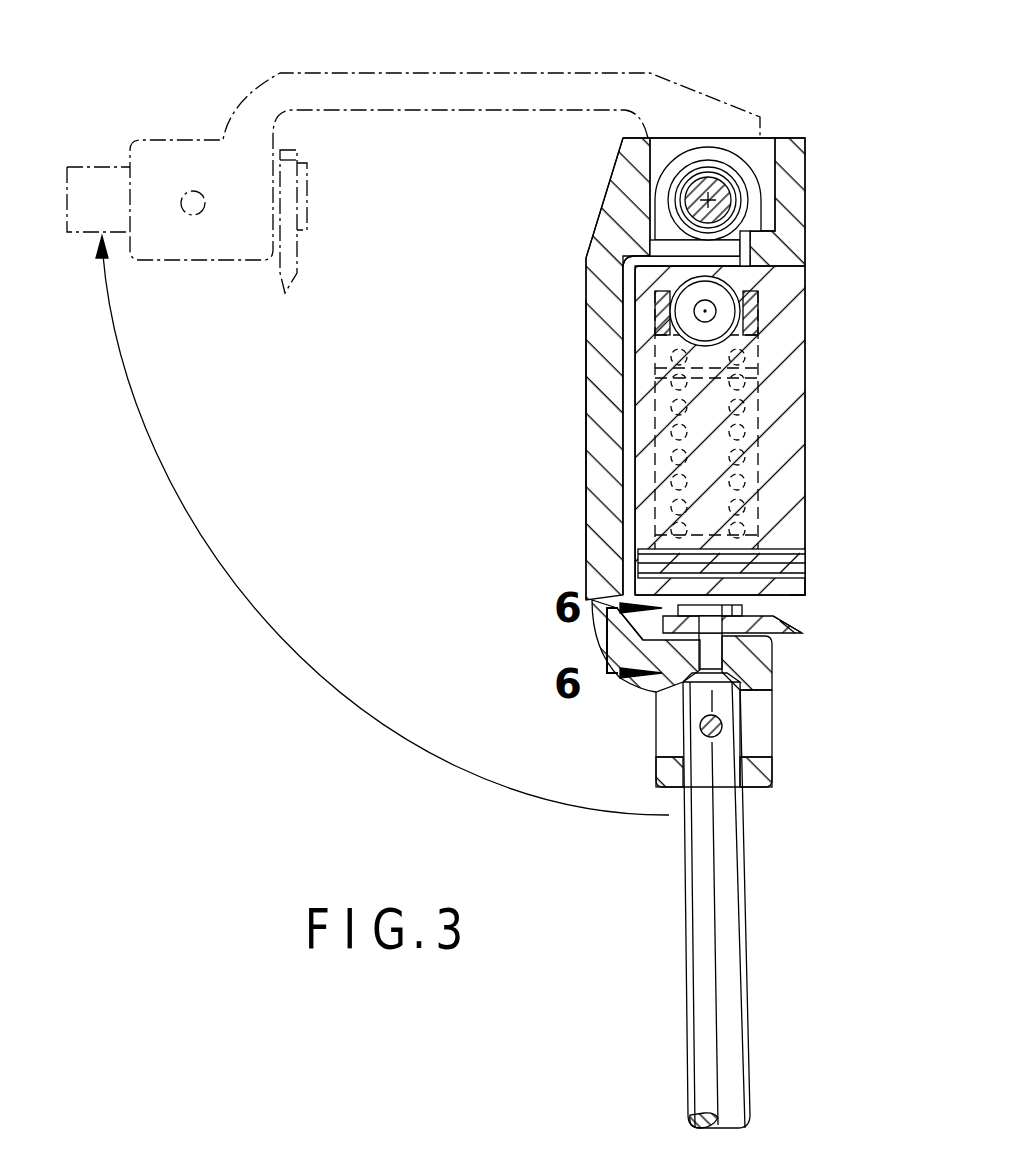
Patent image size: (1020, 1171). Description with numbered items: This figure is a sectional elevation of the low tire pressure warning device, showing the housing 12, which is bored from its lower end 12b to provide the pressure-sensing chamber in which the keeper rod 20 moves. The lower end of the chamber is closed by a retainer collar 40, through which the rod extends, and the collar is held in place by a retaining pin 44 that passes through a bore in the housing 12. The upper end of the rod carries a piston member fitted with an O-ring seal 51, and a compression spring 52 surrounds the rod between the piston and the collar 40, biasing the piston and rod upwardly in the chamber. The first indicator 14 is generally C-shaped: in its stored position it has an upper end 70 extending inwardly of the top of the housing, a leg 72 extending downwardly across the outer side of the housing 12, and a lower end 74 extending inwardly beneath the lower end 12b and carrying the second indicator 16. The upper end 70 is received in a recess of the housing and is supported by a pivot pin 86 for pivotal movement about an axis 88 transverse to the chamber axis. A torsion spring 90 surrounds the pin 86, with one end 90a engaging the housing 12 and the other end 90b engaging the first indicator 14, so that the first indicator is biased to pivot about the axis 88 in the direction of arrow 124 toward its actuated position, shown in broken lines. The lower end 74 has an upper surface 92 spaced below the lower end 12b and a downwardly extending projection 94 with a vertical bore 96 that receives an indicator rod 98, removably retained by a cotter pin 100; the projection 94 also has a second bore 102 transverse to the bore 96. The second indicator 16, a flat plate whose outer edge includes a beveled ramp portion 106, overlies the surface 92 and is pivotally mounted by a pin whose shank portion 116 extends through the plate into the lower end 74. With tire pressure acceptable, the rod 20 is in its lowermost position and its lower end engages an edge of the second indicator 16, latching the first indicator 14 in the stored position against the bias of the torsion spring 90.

The housing 12 is at (804, 441).
The lower end of housing 12b is at (808, 586).
The first indicator 14 is at (341, 73).
The second indicator 16 is at (288, 288).
The keeper rod 20 is at (782, 410).
The retainer collar 40 is at (630, 522).
The retaining pin 44 is at (775, 560).
The O-ring seal 51 is at (762, 345).
The compression spring 52 is at (772, 484).
The upper end of first indicator 70 is at (748, 140).
The leg of first indicator 72 is at (592, 388).
The lower end of first indicator 74 is at (612, 698).
The pivot pin 86 is at (718, 189).
The pivot axis 88 is at (748, 174).
The torsion spring 90 is at (694, 167).
The torsion spring end 90a is at (757, 237).
The torsion spring end 90b is at (662, 192).
The upper surface of lower end 92 is at (758, 635).
The projection 94 is at (660, 768).
The vertical bore 96 is at (748, 768).
The indicator rod 98 is at (700, 890).
The cotter pin 100 is at (722, 728).
The second bore 102 is at (662, 700).
The beveled ramp portion 106 is at (300, 254).
The shank portion 116 is at (750, 642).
The arrow 124 is at (205, 545).